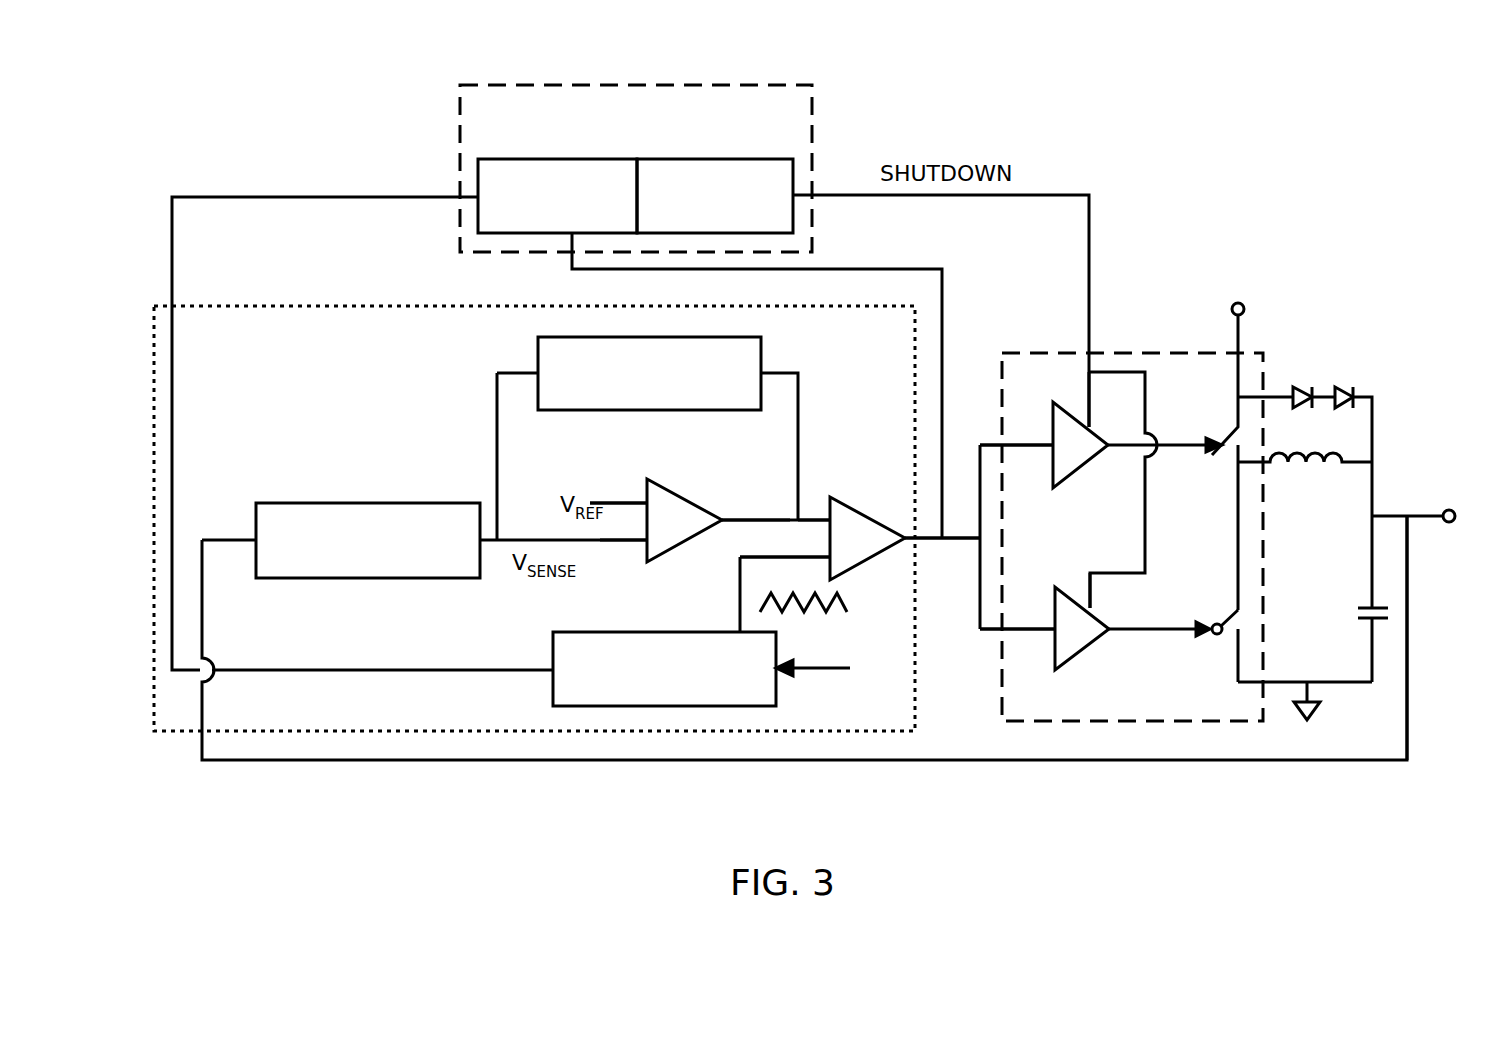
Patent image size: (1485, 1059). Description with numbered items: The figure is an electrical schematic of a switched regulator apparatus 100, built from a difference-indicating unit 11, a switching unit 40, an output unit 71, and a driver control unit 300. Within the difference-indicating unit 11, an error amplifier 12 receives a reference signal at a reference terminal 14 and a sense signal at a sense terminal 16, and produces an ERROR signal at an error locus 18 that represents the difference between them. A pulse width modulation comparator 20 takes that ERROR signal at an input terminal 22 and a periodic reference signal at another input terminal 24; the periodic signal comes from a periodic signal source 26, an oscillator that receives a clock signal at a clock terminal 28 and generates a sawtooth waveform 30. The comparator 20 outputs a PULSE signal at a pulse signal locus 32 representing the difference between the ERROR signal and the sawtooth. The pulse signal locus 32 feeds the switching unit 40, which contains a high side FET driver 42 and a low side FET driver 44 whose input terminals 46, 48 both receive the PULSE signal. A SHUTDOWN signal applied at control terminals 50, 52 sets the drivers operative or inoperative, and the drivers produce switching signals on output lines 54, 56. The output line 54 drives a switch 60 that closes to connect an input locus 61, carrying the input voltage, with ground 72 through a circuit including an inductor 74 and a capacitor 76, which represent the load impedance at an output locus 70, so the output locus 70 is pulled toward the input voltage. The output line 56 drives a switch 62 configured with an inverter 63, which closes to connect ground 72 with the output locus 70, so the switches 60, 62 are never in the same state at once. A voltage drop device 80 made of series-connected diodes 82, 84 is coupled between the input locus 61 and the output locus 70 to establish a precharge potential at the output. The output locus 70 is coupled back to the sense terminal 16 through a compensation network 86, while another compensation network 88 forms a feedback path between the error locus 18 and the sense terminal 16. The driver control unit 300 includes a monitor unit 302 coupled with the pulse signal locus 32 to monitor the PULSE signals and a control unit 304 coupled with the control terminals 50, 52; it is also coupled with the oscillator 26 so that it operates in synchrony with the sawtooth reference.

The difference-indicating unit 11 is at (283, 307).
The error amplifier 12 is at (663, 478).
The reference terminal 14 is at (630, 502).
The sense terminal 16 is at (622, 540).
The error locus 18 is at (737, 520).
The pulse comparator unit 20 is at (848, 495).
The input terminal 22 is at (818, 520).
The input terminal 24 is at (820, 553).
The periodic signal source 26 is at (553, 690).
The clock terminal 28 is at (806, 665).
The waveform 30 is at (866, 603).
The pulse signal locus 32 is at (933, 548).
The switching unit 40 is at (1002, 705).
The high side switching FET driver 42 is at (1074, 410).
The low side switching FET driver 44 is at (1070, 667).
The input terminal 46 is at (1029, 447).
The input terminal 48 is at (1029, 628).
The control terminal 50 is at (1091, 388).
The control terminal 52 is at (1093, 590).
The output line 54 is at (1196, 441).
The output line 56 is at (1179, 625).
The switch 60 is at (1220, 462).
The input locus 61 is at (1246, 305).
The switch 62 is at (1222, 652).
The inverter 63 is at (1217, 622).
The output locus 70 is at (1445, 508).
The output unit 71 is at (1440, 655).
The ground 72 is at (1315, 715).
The inductor 74 is at (1288, 468).
The capacitor 76 is at (1362, 605).
The voltage drop device 80 is at (1380, 322).
The diode 82 is at (1297, 386).
The diode 84 is at (1338, 388).
The compensation network 86 is at (334, 503).
The compensation network 88 is at (765, 350).
The regulator apparatus 100 is at (1098, 842).
The driver control unit 300 is at (812, 122).
The monitor unit 302 is at (477, 217).
The control unit 304 is at (795, 215).